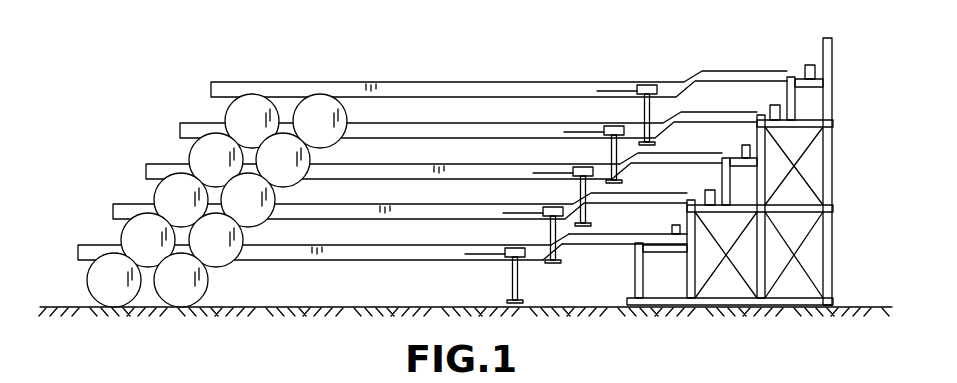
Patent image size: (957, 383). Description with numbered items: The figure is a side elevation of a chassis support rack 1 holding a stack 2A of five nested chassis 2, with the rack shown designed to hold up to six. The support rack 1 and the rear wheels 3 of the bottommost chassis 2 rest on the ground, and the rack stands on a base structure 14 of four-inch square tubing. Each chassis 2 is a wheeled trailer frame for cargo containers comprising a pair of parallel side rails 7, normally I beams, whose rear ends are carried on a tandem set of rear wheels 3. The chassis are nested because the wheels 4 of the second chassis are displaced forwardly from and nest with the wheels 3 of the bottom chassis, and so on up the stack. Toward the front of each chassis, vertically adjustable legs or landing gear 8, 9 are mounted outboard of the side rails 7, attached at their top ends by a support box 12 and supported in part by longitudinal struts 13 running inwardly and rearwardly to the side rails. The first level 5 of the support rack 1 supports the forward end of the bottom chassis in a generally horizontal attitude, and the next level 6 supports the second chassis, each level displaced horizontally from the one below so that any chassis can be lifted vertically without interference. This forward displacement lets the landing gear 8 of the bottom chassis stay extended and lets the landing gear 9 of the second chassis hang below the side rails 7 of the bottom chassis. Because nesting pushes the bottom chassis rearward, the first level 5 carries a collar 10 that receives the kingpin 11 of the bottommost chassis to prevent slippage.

The chassis support rack 1 is at (862, 118).
The chassis 2 is at (77, 250).
The stack 2A is at (156, 131).
The wheels 3 is at (115, 292).
The wheels 4 is at (152, 252).
The first level 5 is at (668, 252).
The next level 6 is at (733, 212).
The side rails 7 is at (283, 258).
The landing gear 8 is at (513, 277).
The landing gear 9 is at (562, 248).
The collar 10 is at (627, 253).
The kingpin 11 is at (786, 72).
The support box 12 is at (648, 85).
The longitudinal struts 13 is at (628, 72).
The base structure 14 is at (797, 305).